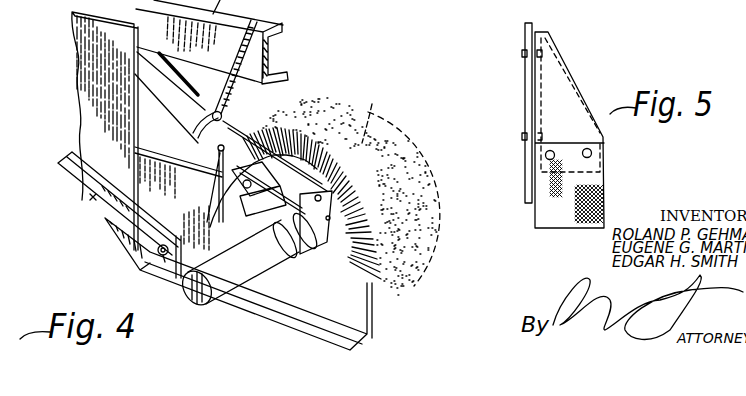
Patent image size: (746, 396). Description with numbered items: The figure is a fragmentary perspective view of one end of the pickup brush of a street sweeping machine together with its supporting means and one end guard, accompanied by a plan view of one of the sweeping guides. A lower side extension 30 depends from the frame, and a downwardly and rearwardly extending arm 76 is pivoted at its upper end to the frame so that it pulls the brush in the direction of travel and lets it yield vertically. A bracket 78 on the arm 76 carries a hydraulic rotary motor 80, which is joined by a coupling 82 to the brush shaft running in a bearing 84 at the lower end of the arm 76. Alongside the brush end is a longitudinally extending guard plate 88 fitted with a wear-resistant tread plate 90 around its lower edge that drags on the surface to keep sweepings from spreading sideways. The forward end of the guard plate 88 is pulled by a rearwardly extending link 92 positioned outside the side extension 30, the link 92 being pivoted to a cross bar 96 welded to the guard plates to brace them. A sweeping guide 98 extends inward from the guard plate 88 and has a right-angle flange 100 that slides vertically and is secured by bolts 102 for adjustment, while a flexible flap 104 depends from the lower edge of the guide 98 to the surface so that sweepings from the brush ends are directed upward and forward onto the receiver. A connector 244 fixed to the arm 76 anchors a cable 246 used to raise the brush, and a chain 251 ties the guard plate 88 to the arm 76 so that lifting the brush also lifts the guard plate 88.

In FIG. 4, the lower side extension 30 is at (80, 95).
In FIG. 4, the arm 76 is at (193, 103).
In FIG. 4, the bracket 78 is at (228, 209).
In FIG. 4, the hydraulic rotary motor 80 is at (216, 276).
In FIG. 4, the coupling 82 is at (293, 236).
In FIG. 4, the bearing 84 is at (362, 220).
In FIG. 4, the guard plate 88 is at (374, 310).
In FIG. 5, the guard plate 88 is at (526, 73).
In FIG. 4, the tread plate 90 is at (394, 0).
In FIG. 4, the link 92 is at (93, 193).
In FIG. 4, the cross bar 96 is at (163, 258).
In FIG. 5, the sweeping guide 98 is at (568, 98).
In FIG. 5, the flange 100 is at (537, 100).
In FIG. 5, the bolt 102 is at (524, 52).
In FIG. 5, the flap 104 is at (563, 222).
In FIG. 4, the connector 244 is at (223, 116).
In FIG. 4, the cable 246 is at (268, 52).
In FIG. 4, the chain 251 is at (216, 164).